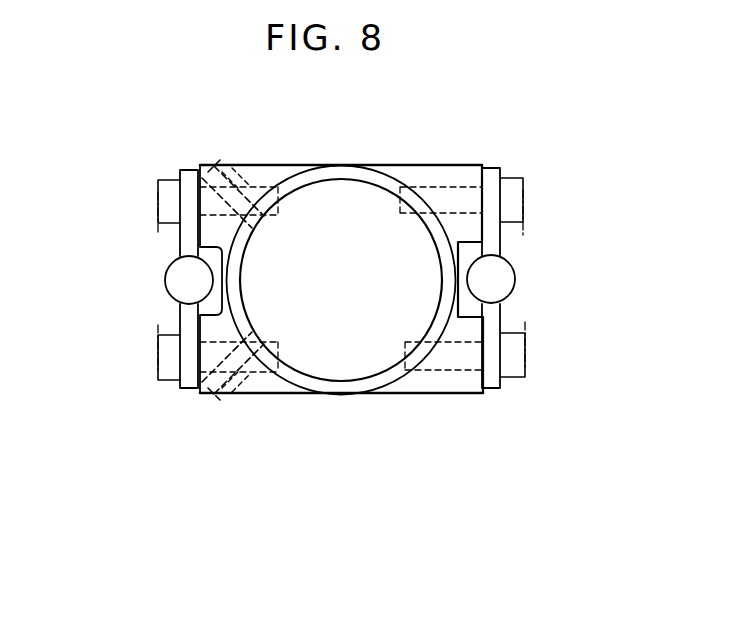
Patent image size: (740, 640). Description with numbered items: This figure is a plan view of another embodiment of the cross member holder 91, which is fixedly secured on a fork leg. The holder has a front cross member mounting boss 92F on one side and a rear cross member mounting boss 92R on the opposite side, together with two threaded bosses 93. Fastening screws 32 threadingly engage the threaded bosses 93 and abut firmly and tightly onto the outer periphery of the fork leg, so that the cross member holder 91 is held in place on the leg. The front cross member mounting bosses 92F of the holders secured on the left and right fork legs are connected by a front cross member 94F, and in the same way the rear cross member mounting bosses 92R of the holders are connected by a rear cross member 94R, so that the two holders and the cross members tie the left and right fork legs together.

The cross member holder 91 is at (288, 160).
The front cross member mounting boss 92F is at (198, 168).
The rear cross member mounting boss 92R is at (484, 167).
The threaded boss 93 is at (241, 165).
The fastening screw 32 is at (157, 212).
The front cross member 94F is at (165, 281).
The rear cross member 94R is at (515, 281).